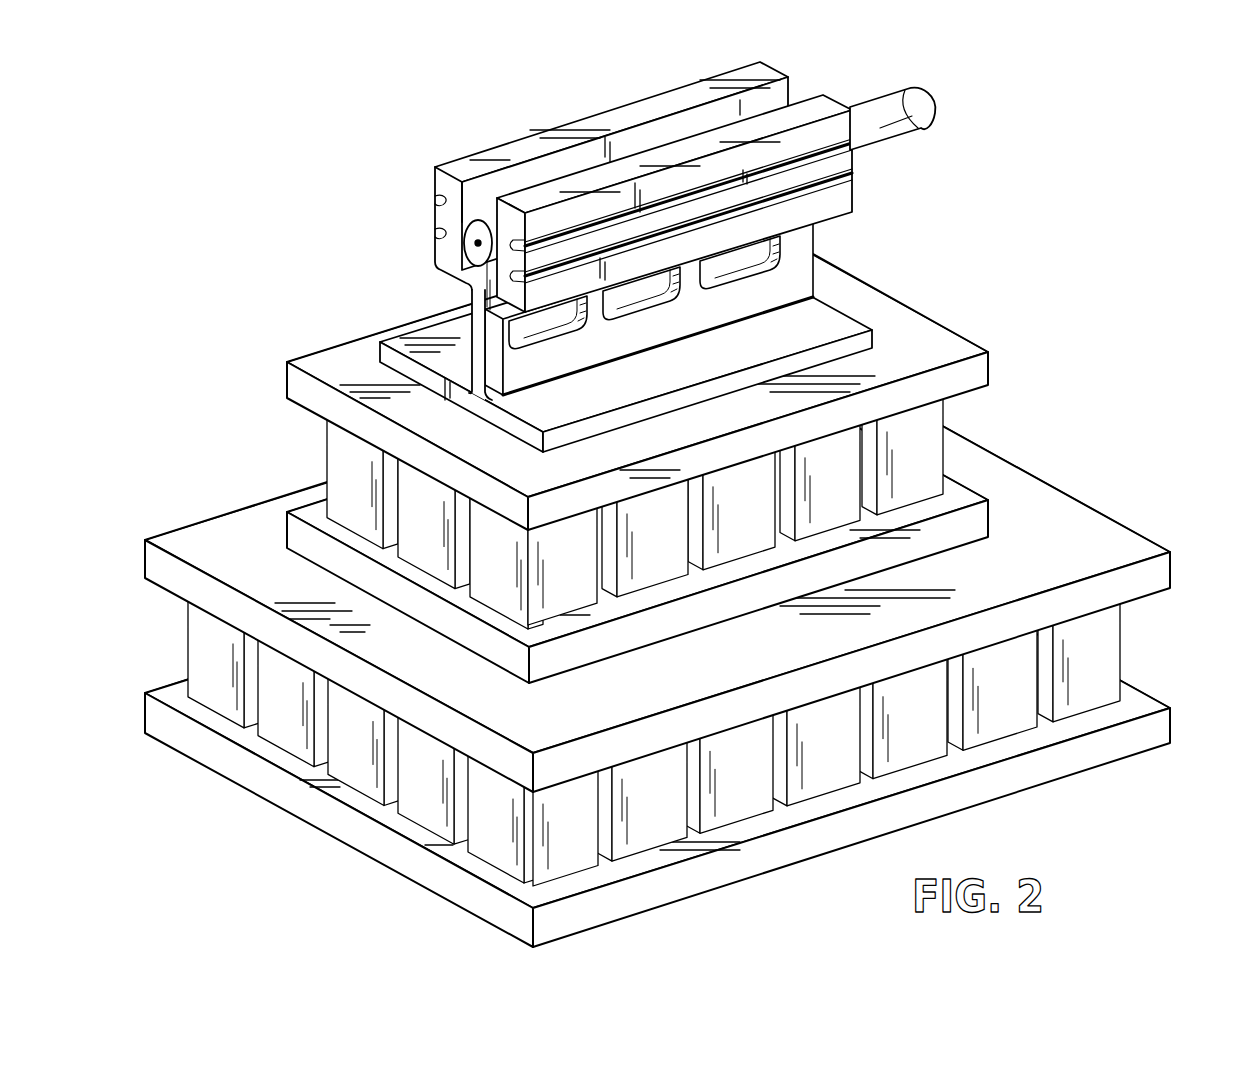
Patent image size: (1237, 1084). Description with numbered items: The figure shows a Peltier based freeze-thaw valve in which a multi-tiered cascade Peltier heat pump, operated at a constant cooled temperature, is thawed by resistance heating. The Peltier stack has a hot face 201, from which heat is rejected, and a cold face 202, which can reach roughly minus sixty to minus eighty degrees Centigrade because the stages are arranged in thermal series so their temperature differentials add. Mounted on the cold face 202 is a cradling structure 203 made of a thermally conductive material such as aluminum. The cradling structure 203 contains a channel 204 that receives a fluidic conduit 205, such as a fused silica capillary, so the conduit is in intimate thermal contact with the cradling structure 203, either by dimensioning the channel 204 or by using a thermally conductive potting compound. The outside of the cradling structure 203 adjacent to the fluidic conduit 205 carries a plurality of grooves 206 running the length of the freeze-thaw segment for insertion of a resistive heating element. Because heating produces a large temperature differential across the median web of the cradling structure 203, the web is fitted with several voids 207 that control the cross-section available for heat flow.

The hot face 201 is at (1160, 727).
The cold face 202 is at (956, 343).
The cradling structure 203 is at (852, 197).
The channel 204 is at (478, 196).
The fluidic conduit 205 is at (902, 91).
The grooves 206 is at (838, 173).
The voids 207 is at (527, 322).